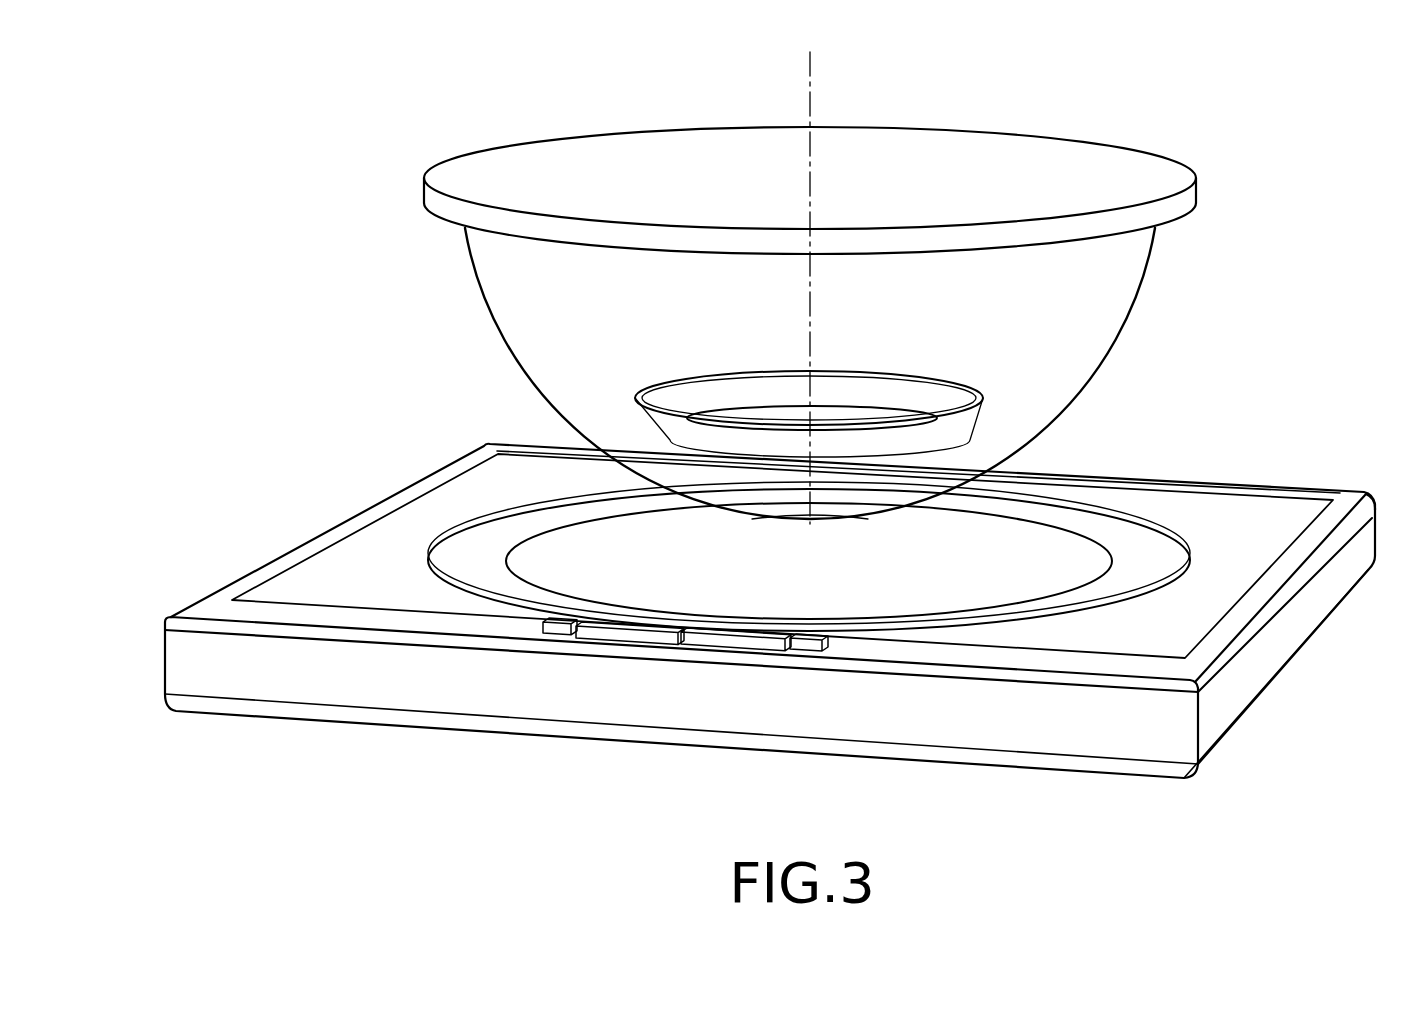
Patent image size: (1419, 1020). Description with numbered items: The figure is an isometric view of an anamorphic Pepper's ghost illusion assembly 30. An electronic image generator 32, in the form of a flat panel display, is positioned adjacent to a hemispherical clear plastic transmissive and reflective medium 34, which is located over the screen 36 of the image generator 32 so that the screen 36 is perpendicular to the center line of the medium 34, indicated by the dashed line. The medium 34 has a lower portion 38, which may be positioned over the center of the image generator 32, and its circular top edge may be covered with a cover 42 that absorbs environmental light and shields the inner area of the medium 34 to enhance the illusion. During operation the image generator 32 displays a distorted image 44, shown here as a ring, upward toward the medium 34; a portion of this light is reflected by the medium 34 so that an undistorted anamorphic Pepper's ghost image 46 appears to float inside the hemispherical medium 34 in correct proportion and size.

The anamorphic Pepper's ghost illusion assembly 30 is at (328, 147).
The electronic image generator 32 is at (163, 688).
The hemispherical transmissive and reflective medium 34 is at (1140, 283).
The screen 36 is at (1283, 508).
The lower portion 38 is at (1005, 463).
The cover 42 is at (562, 160).
The distorted image 44 is at (432, 547).
The undistorted anamorphic Pepper's ghost image 46 is at (983, 400).